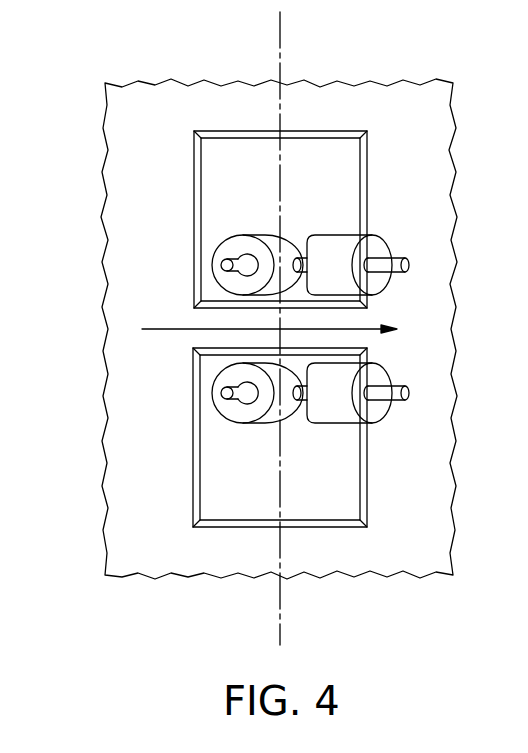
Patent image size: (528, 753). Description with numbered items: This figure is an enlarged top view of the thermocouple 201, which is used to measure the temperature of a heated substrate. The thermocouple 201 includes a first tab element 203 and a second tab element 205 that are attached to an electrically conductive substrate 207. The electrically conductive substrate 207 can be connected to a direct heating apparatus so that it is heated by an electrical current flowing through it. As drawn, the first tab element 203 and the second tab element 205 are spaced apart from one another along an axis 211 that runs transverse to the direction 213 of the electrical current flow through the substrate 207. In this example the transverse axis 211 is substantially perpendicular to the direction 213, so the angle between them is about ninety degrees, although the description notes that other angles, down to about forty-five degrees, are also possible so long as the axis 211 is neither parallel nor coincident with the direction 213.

The thermocouple 201 is at (408, 132).
The first tab element 203 is at (343, 131).
The second tab element 205 is at (334, 527).
The electrically conductive substrate 207 is at (118, 160).
The axis 211 is at (280, 37).
The direction of electrical current flow 213 is at (158, 328).